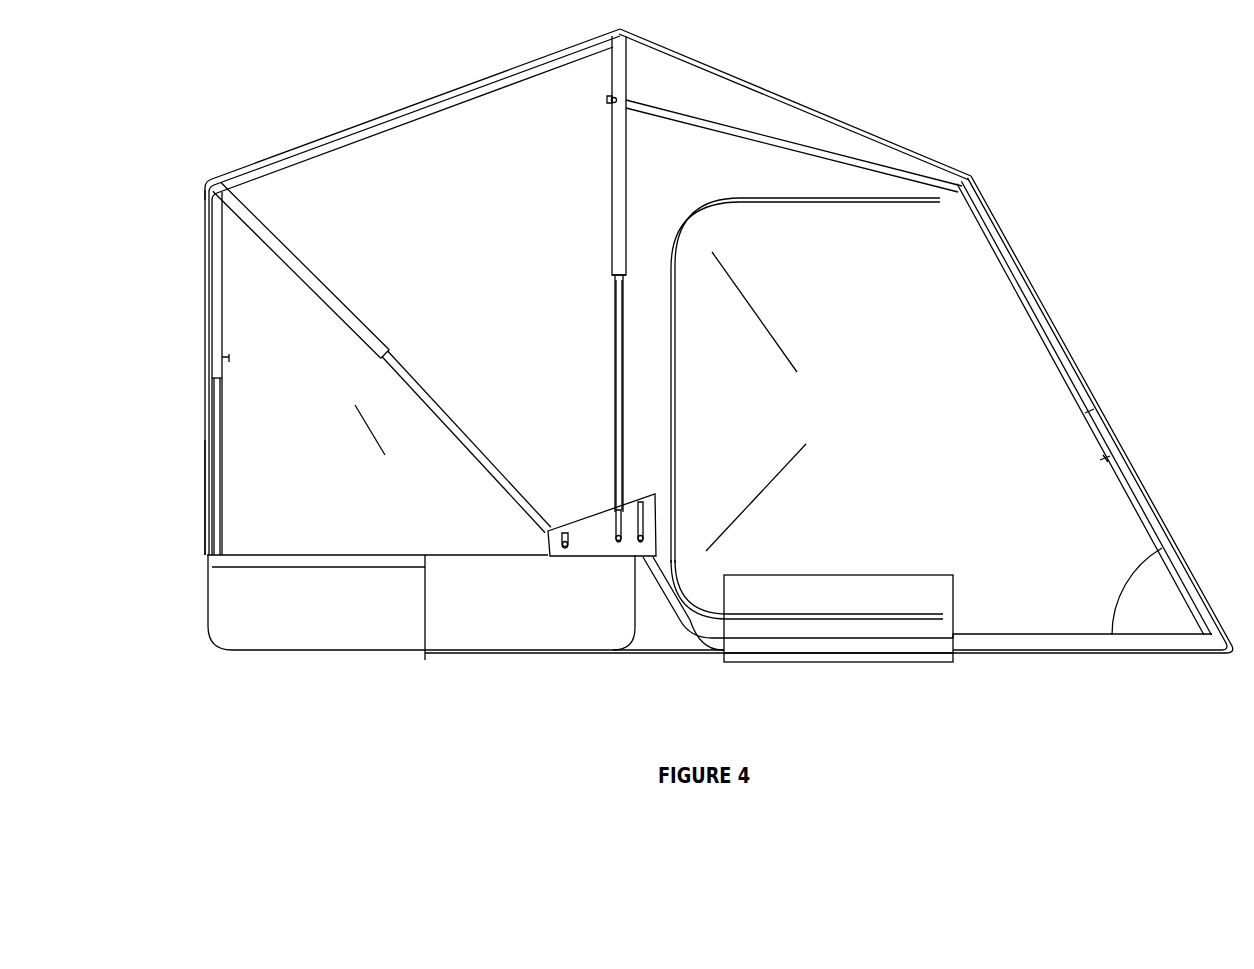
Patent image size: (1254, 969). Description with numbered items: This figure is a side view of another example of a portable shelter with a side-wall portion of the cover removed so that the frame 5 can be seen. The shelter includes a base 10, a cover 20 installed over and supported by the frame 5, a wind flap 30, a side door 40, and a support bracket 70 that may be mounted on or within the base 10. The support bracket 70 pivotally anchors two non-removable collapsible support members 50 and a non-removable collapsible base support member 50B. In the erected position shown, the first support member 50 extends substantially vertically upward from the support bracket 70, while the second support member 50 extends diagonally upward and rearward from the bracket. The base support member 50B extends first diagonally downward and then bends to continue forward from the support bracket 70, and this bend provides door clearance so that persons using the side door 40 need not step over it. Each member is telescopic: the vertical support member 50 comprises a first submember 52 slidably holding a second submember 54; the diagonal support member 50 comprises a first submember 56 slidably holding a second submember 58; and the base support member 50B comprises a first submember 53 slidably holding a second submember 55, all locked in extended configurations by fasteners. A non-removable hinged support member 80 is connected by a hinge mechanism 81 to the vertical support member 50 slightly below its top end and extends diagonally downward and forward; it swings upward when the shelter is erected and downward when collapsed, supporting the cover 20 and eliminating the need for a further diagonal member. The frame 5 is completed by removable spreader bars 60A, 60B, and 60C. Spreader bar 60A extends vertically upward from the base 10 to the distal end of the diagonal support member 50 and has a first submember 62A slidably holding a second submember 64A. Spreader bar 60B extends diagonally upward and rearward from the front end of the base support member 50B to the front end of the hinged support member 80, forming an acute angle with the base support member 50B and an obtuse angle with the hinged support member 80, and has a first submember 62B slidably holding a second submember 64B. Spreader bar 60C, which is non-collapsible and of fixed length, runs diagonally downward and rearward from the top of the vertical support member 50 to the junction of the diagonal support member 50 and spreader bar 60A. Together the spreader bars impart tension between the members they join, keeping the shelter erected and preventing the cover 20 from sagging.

The frame 5 is at (344, 189).
The base 10 is at (253, 628).
The cover 20 is at (347, 412).
The wind flap 30 is at (913, 600).
The side door 40 is at (807, 408).
The non-removable collapsible support member 50 is at (612, 152).
The non-removable collapsible base support member 50B is at (982, 633).
The first submember 52 is at (609, 233).
The first submember 53 is at (1063, 632).
The second submember 54 is at (613, 333).
The second submember 55 is at (915, 650).
The first submember 56 is at (286, 268).
The second submember 58 is at (472, 460).
The removable collapsible spreader bar 60A is at (212, 312).
The removable collapsible spreader bar 60B is at (1080, 388).
The removable spreader bar 60C is at (450, 95).
The first submember 62A is at (208, 233).
The first submember 62B is at (1165, 505).
The second submember 64A is at (207, 488).
The second submember 64B is at (1050, 302).
The support bracket 70 is at (600, 533).
The non-removable hinged support member 80 is at (723, 138).
The hinge mechanism 81 is at (644, 99).